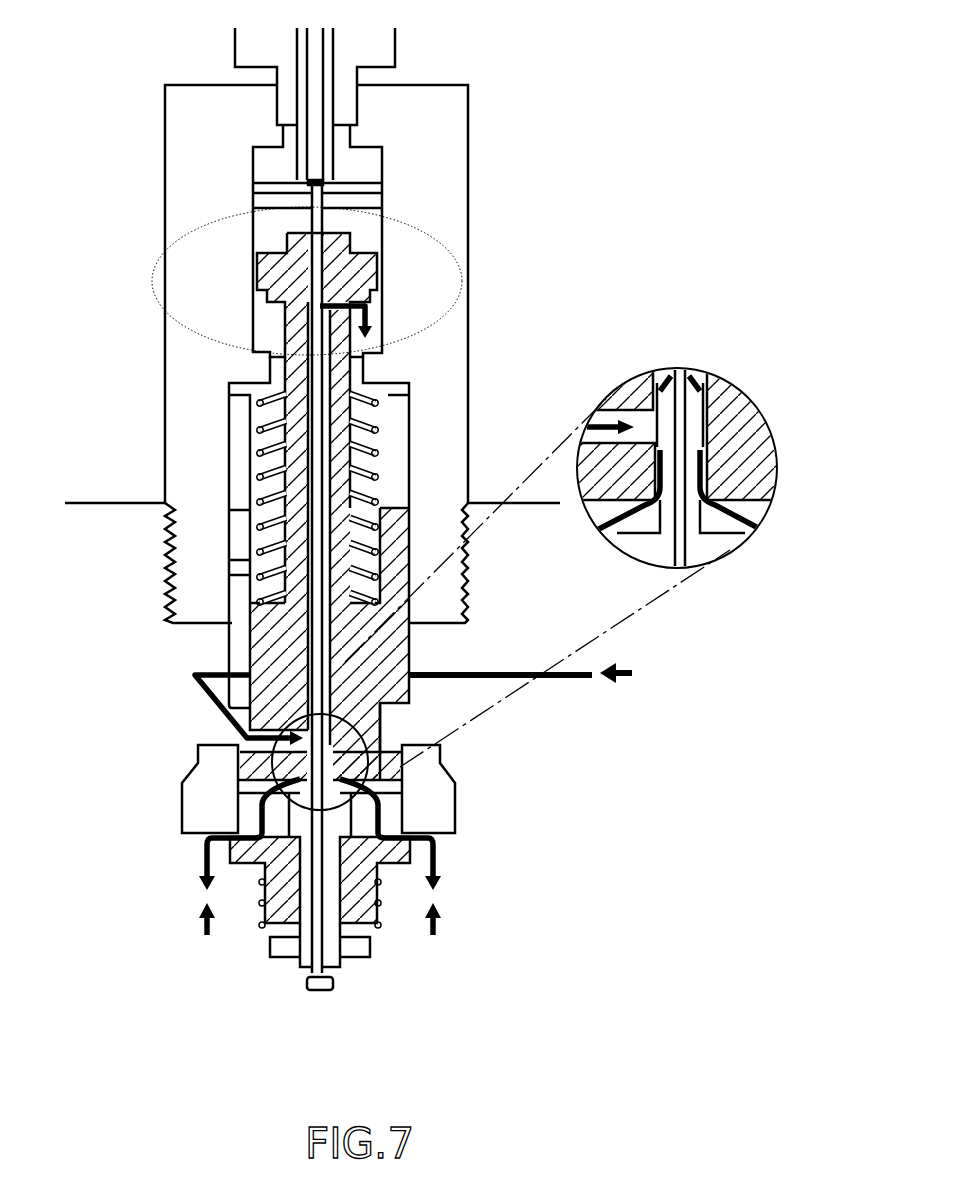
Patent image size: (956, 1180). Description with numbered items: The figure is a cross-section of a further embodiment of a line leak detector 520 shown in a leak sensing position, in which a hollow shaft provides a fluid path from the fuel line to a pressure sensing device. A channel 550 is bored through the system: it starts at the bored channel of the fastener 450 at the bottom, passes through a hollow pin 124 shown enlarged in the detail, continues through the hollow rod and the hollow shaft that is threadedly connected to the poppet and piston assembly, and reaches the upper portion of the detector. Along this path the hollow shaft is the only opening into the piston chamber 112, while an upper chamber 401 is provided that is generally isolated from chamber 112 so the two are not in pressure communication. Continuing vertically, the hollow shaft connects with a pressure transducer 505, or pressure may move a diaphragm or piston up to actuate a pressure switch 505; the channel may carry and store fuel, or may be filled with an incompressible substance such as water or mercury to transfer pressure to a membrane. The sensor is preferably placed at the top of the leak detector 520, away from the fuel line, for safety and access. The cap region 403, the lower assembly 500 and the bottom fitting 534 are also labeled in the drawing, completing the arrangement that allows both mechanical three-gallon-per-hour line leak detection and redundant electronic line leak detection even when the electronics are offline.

The pressure transducer 505 is at (327, 177).
The upper cap 403 is at (253, 178).
The upper chamber 401 is at (383, 157).
The piston chamber 112 is at (253, 235).
The channel 550 is at (383, 252).
The leak detector 520 is at (167, 323).
The hollow pin 124 is at (700, 433).
The valve assembly 500 is at (245, 945).
The bottom fitting 534 is at (287, 970).
The fastener 450 is at (331, 989).